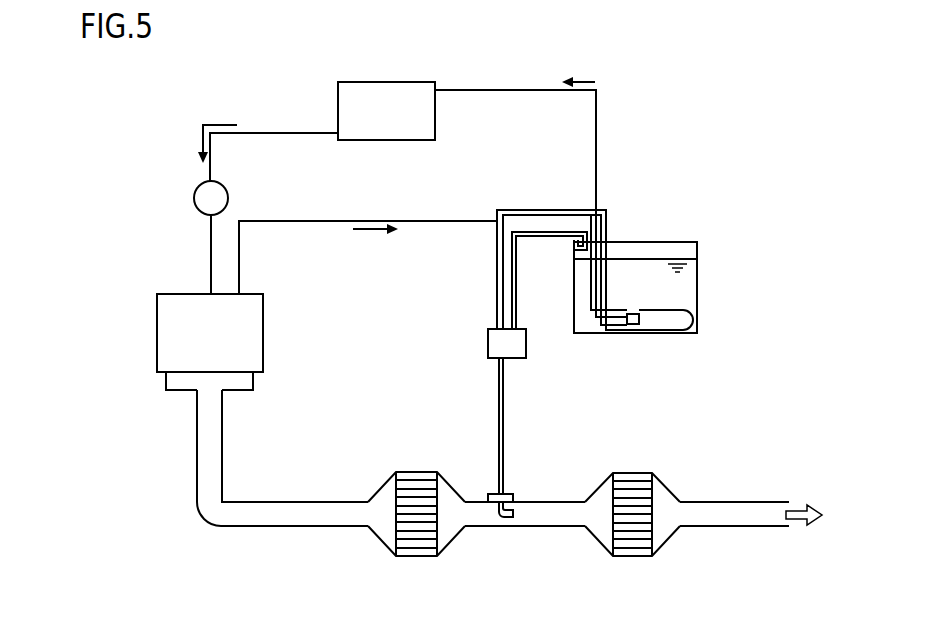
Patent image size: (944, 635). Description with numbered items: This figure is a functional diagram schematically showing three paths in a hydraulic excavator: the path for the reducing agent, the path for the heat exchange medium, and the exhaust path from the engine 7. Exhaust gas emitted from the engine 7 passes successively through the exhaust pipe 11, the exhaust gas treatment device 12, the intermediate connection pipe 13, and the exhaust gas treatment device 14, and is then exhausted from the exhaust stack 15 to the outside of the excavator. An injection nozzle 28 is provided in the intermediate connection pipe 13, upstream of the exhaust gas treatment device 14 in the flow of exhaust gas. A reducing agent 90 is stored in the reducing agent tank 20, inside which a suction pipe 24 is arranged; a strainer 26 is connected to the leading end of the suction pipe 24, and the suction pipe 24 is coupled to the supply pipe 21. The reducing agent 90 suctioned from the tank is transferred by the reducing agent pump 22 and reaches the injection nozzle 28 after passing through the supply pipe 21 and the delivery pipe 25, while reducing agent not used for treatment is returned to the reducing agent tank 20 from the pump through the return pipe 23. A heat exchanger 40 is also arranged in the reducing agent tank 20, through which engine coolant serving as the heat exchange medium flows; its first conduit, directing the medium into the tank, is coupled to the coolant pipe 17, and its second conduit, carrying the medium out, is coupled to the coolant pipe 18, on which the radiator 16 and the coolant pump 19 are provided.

The engine 7 is at (170, 334).
The exhaust pipe 11 is at (277, 512).
The exhaust gas treatment device 12 is at (417, 545).
The intermediate connection pipe 13 is at (533, 515).
The exhaust gas treatment device 14 is at (636, 545).
The exhaust stack 15 is at (740, 515).
The radiator 16 is at (385, 96).
The coolant pipe 17 is at (303, 224).
The coolant pipe 18 is at (494, 88).
The coolant pump 19 is at (194, 197).
The reducing agent tank 20 is at (700, 268).
The supply pipe 21 is at (496, 287).
The reducing agent pump 22 is at (488, 343).
The return pipe 23 is at (515, 286).
The suction pipe 24 is at (608, 283).
The delivery pipe 25 is at (497, 428).
The strainer 26 is at (632, 326).
The injection nozzle 28 is at (508, 495).
The heat exchanger 40 is at (668, 331).
The reducing agent 90 is at (686, 289).